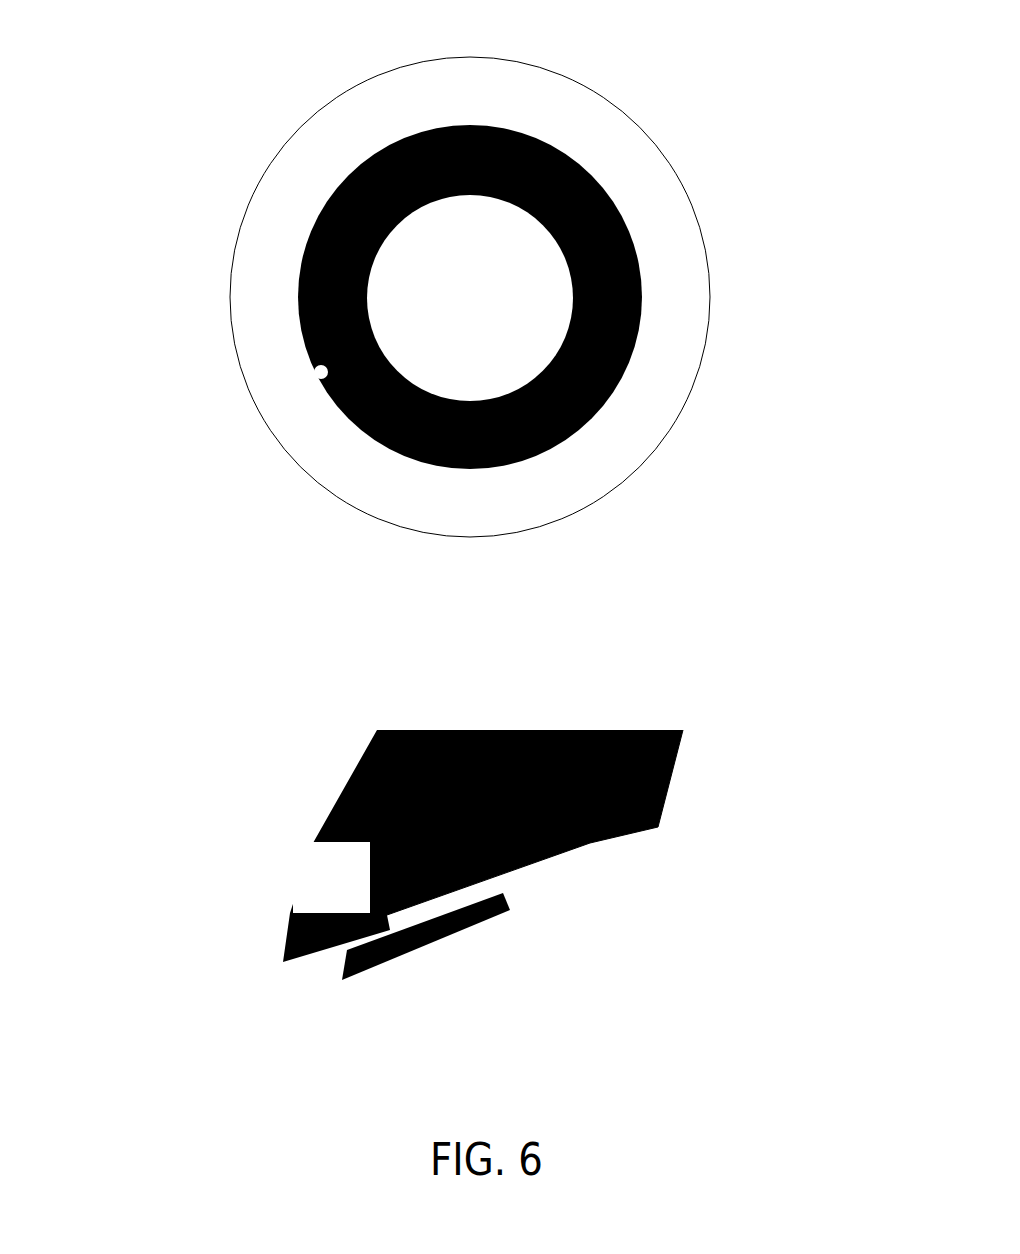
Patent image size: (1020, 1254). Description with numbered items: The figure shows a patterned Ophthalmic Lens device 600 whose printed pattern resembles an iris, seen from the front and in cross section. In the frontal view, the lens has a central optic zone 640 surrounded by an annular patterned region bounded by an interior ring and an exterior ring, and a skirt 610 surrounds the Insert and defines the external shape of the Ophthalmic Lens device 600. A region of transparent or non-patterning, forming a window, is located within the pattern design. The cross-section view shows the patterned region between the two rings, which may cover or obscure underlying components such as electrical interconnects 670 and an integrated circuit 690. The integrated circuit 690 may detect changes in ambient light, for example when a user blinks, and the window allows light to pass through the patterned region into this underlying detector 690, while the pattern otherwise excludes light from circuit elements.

The patterned Ophthalmic Lens device 600 is at (441, 284).
The skirt 610 is at (400, 297).
The central optic zone 640 is at (578, 278).
The electrical interconnects 670 is at (635, 909).
The integrated circuit 690 is at (497, 982).